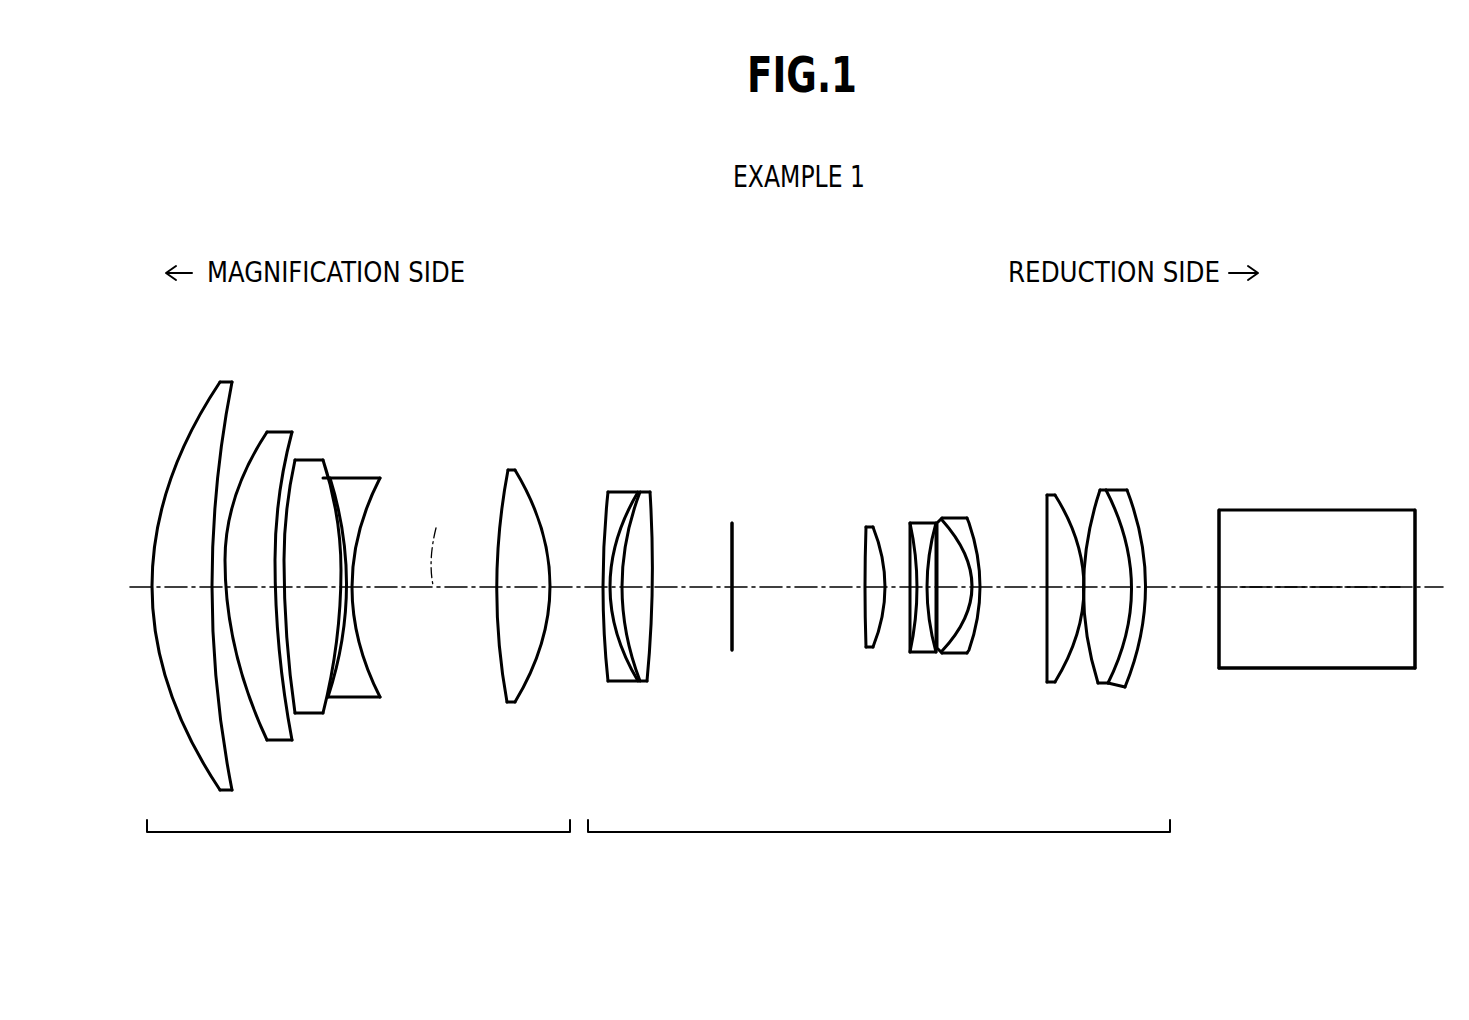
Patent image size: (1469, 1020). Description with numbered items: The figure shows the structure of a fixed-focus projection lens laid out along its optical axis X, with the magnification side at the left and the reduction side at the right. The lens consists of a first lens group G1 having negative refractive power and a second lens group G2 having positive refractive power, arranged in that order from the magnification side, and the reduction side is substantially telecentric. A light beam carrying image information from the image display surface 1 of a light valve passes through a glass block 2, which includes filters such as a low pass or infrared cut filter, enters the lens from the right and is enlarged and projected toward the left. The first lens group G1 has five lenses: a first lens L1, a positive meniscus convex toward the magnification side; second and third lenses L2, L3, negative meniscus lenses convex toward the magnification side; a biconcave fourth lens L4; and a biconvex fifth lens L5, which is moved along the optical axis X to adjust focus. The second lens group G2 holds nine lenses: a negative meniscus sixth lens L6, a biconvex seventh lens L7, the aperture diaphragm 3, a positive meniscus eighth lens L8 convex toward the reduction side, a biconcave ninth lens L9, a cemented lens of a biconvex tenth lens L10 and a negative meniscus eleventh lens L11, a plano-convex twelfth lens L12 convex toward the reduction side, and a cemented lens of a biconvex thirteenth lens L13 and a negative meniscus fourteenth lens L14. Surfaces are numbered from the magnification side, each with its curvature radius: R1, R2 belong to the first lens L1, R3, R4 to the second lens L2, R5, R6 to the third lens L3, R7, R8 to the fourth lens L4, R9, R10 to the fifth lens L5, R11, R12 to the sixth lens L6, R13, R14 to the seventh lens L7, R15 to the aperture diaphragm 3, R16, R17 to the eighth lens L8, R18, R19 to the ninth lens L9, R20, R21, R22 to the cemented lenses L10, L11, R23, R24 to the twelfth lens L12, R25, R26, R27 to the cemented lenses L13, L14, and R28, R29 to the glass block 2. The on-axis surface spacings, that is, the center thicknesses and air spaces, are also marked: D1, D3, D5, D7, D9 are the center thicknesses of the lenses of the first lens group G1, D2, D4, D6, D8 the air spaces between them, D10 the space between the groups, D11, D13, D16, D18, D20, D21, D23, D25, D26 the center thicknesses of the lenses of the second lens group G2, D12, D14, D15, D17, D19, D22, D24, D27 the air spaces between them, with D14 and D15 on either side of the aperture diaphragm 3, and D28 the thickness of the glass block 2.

The image display surface 1 is at (1417, 648).
The glass block 2 is at (1357, 657).
The aperture diaphragm 3 is at (733, 540).
The optical axis X is at (420, 541).
The first lens group G1 is at (358, 843).
The second lens group G2 is at (879, 843).
The first lens L1 is at (181, 557).
The second lens L2 is at (280, 526).
The third lens L3 is at (313, 536).
The fourth lens L4 is at (362, 558).
The fifth lens L5 is at (524, 545).
The sixth lens L6 is at (631, 544).
The seventh lens L7 is at (670, 565).
The eighth lens L8 is at (843, 554).
The ninth lens L9 is at (875, 519).
The tenth lens L10 is at (956, 498).
The eleventh lens L11 is at (998, 495).
The twelfth lens L12 is at (1056, 517).
The thirteenth lens L13 is at (1137, 547).
The fourteenth lens L14 is at (1151, 572).
The curvature radius of first surface R1 is at (150, 545).
The curvature radius of second surface R2 is at (222, 483).
The curvature radius of third surface R3 is at (244, 455).
The curvature radius of fourth surface R4 is at (250, 505).
The curvature radius of fifth surface R5 is at (276, 556).
The curvature radius of sixth surface R6 is at (325, 480).
The curvature radius of seventh surface R7 is at (328, 540).
The curvature radius of eighth surface R8 is at (351, 563).
The curvature radius of ninth surface R9 is at (497, 575).
The curvature radius of tenth surface R10 is at (550, 565).
The curvature radius of eleventh surface R11 is at (606, 520).
The curvature radius of twelfth surface R12 is at (636, 500).
The curvature radius of thirteenth surface R13 is at (624, 563).
The curvature radius of fourteenth surface R14 is at (656, 583).
The fifteenth surface R15 is at (733, 583).
The curvature radius of sixteenth surface R16 is at (866, 577).
The curvature radius of seventeenth surface R17 is at (880, 537).
The curvature radius of eighteenth surface R18 is at (900, 540).
The curvature radius of nineteenth surface R19 is at (917, 540).
The curvature radius of twentieth surface R20 is at (927, 537).
The curvature radius of twenty-first surface R21 is at (957, 520).
The curvature radius of twenty-second surface R22 is at (975, 540).
The curvature radius of twenty-third surface R23 is at (1046, 577).
The curvature radius of twenty-fourth surface R24 is at (1076, 540).
The curvature radius of twenty-fifth surface R25 is at (1090, 520).
The curvature radius of twenty-sixth surface R26 is at (1127, 522).
The curvature radius of twenty-seventh surface R27 is at (1140, 540).
The curvature radius of twenty-eighth surface R28 is at (1212, 540).
The curvature radius of twenty-ninth surface R29 is at (1417, 533).
The on-axis surface spacing D1 is at (152, 592).
The on-axis surface spacing D2 is at (203, 592).
The on-axis surface spacing D3 is at (218, 595).
The on-axis surface spacing D4 is at (278, 595).
The on-axis surface spacing D5 is at (312, 595).
The on-axis surface spacing D6 is at (323, 588).
The on-axis surface spacing D7 is at (348, 595).
The on-axis surface spacing D8 is at (408, 592).
The on-axis surface spacing D9 is at (510, 592).
The on-axis surface spacing D10 is at (571, 592).
The on-axis surface spacing D11 is at (606, 592).
The on-axis surface spacing D12 is at (617, 592).
The on-axis surface spacing D13 is at (638, 592).
The on-axis surface spacing D14 is at (687, 592).
The on-axis surface spacing D15 is at (815, 593).
The on-axis surface spacing D16 is at (870, 592).
The on-axis surface spacing D17 is at (897, 592).
The on-axis surface spacing D18 is at (921, 592).
The on-axis surface spacing D19 is at (931, 592).
The on-axis surface spacing D20 is at (950, 592).
The on-axis surface spacing D21 is at (978, 592).
The on-axis surface spacing D22 is at (1012, 592).
The on-axis surface spacing D23 is at (1066, 592).
The on-axis surface spacing D24 is at (1085, 592).
The on-axis surface spacing D25 is at (1108, 592).
The on-axis surface spacing D26 is at (1137, 592).
The on-axis surface spacing D27 is at (1180, 592).
The on-axis surface spacing D28 is at (1320, 607).